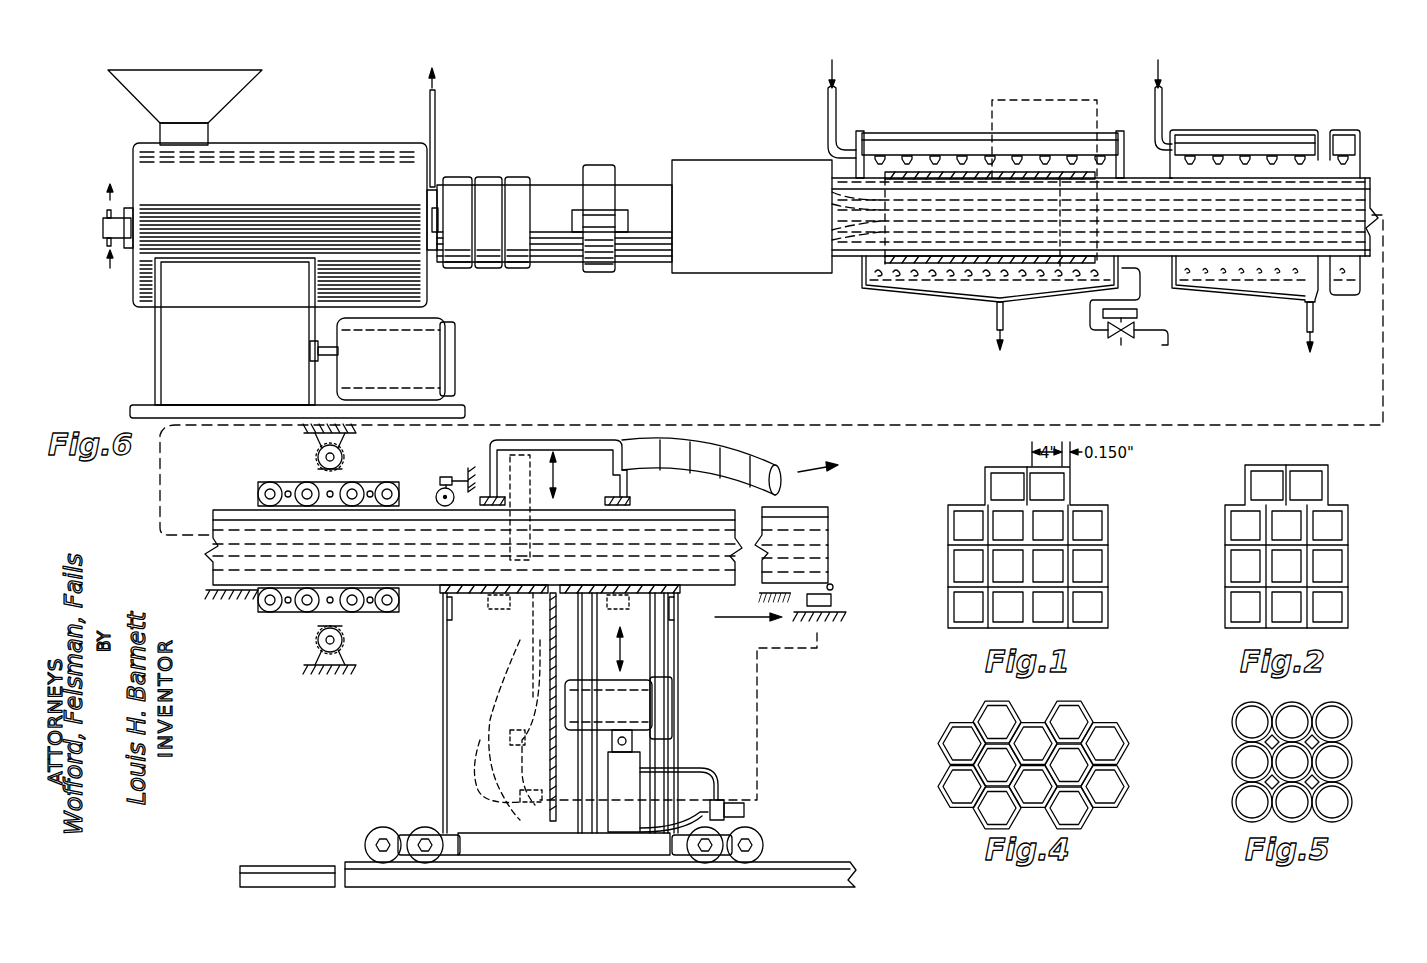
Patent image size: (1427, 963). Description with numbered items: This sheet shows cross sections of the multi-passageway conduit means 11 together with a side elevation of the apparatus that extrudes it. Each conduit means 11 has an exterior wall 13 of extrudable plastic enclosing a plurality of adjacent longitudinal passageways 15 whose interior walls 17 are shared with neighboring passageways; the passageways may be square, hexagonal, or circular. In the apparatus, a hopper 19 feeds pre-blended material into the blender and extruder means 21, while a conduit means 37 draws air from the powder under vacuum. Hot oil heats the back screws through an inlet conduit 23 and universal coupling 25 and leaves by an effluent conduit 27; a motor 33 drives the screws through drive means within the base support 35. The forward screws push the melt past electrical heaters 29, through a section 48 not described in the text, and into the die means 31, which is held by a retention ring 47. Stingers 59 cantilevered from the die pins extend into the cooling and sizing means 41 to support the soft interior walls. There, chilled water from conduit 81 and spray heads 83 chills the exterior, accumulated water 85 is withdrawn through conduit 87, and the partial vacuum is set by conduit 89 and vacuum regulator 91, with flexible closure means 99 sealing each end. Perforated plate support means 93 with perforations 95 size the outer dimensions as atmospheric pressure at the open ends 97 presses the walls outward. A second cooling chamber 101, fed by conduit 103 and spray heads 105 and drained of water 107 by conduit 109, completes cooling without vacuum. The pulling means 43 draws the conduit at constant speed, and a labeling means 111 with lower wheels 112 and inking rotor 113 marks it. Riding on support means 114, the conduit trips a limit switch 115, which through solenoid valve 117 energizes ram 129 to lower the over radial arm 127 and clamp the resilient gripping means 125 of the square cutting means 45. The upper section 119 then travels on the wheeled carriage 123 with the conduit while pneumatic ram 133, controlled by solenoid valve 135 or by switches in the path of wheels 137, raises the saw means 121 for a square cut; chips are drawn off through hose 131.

In FIG. 6, the conduit means 11 is at (238, 498).
In FIG. 1, the conduit means 11 is at (1056, 548).
In FIG. 2, the conduit means 11 is at (1308, 546).
In FIG. 4, the conduit means 11 is at (1052, 758).
In FIG. 5, the conduit means 11 is at (1312, 764).
In FIG. 1, the exterior wall 13 is at (1108, 572).
In FIG. 2, the exterior wall 13 is at (1348, 535).
In FIG. 4, the exterior wall 13 is at (1124, 742).
In FIG. 5, the exterior wall 13 is at (1352, 752).
In FIG. 1, the passageways 15 is at (1098, 612).
In FIG. 2, the passageways 15 is at (1340, 616).
In FIG. 4, the passageways 15 is at (1108, 790).
In FIG. 5, the passageways 15 is at (1340, 806).
In FIG. 1, the interior walls 17 is at (1085, 575).
In FIG. 2, the interior walls 17 is at (1308, 575).
In FIG. 4, the interior walls 17 is at (1105, 760).
In FIG. 5, the interior walls 17 is at (1335, 776).
In FIG. 6, the hopper 19 is at (128, 94).
In FIG. 6, the blender and extruder means 21 is at (345, 111).
In FIG. 6, the inlet conduit 23 is at (106, 246).
In FIG. 6, the universal coupling 25 is at (128, 262).
In FIG. 6, the effluent conduit 27 is at (106, 212).
In FIG. 6, the electrical heaters 29 is at (518, 178).
In FIG. 6, the die means 31 is at (738, 276).
In FIG. 6, the motor 33 is at (458, 328).
In FIG. 6, the base support 35 is at (190, 374).
In FIG. 6, the conduit means 37 is at (440, 112).
In FIG. 6, the cooling and sizing means 41 is at (988, 218).
In FIG. 6, the pulling means 43 is at (292, 622).
In FIG. 6, the square cutting means 45 is at (561, 724).
In FIG. 6, the retention ring 47 is at (600, 168).
In FIG. 6, the barrel extension 48 is at (652, 266).
In FIG. 6, the stinger 59 is at (868, 264).
In FIG. 6, the conduit 81 is at (840, 106).
In FIG. 6, the spray heads 83 is at (945, 160).
In FIG. 6, the water 85 is at (985, 296).
In FIG. 6, the conduit 87 is at (1006, 314).
In FIG. 6, the conduit 89 is at (1094, 333).
In FIG. 6, the vacuum regulator 91 is at (1120, 338).
In FIG. 6, the perforated plate support means 93 is at (1098, 190).
In FIG. 6, the perforations 95 is at (1064, 268).
In FIG. 6, the open ends 97 is at (830, 510).
In FIG. 6, the flexible closure means 99 is at (858, 160).
In FIG. 6, the cooling chamber 101 is at (1290, 132).
In FIG. 6, the conduit 103 is at (1162, 104).
In FIG. 6, the spray heads 105 is at (1232, 158).
In FIG. 6, the water 107 is at (1282, 300).
In FIG. 6, the conduit 109 is at (1316, 326).
In FIG. 6, the labeling means 111 is at (440, 490).
In FIG. 6, the lower wheels 112 is at (442, 478).
In FIG. 6, the rotor 113 is at (468, 470).
In FIG. 6, the support means 114 is at (758, 594).
In FIG. 6, the limit switch 115 is at (834, 586).
In FIG. 6, the solenoid valve 117 is at (478, 790).
In FIG. 6, the upper section 119 is at (442, 615).
In FIG. 6, the saw means 121 is at (655, 688).
In FIG. 6, the wheeled carriage 123 is at (395, 832).
In FIG. 6, the resilient gripping means 125 is at (630, 503).
In FIG. 6, the over radial arm 127 is at (680, 437).
In FIG. 6, the ram 129 is at (475, 700).
In FIG. 6, the hose 131 is at (760, 468).
In FIG. 6, the pneumatic ram 133 is at (642, 770).
In FIG. 6, the solenoid valve 135 is at (745, 800).
In FIG. 6, the wheels 137 is at (768, 856).